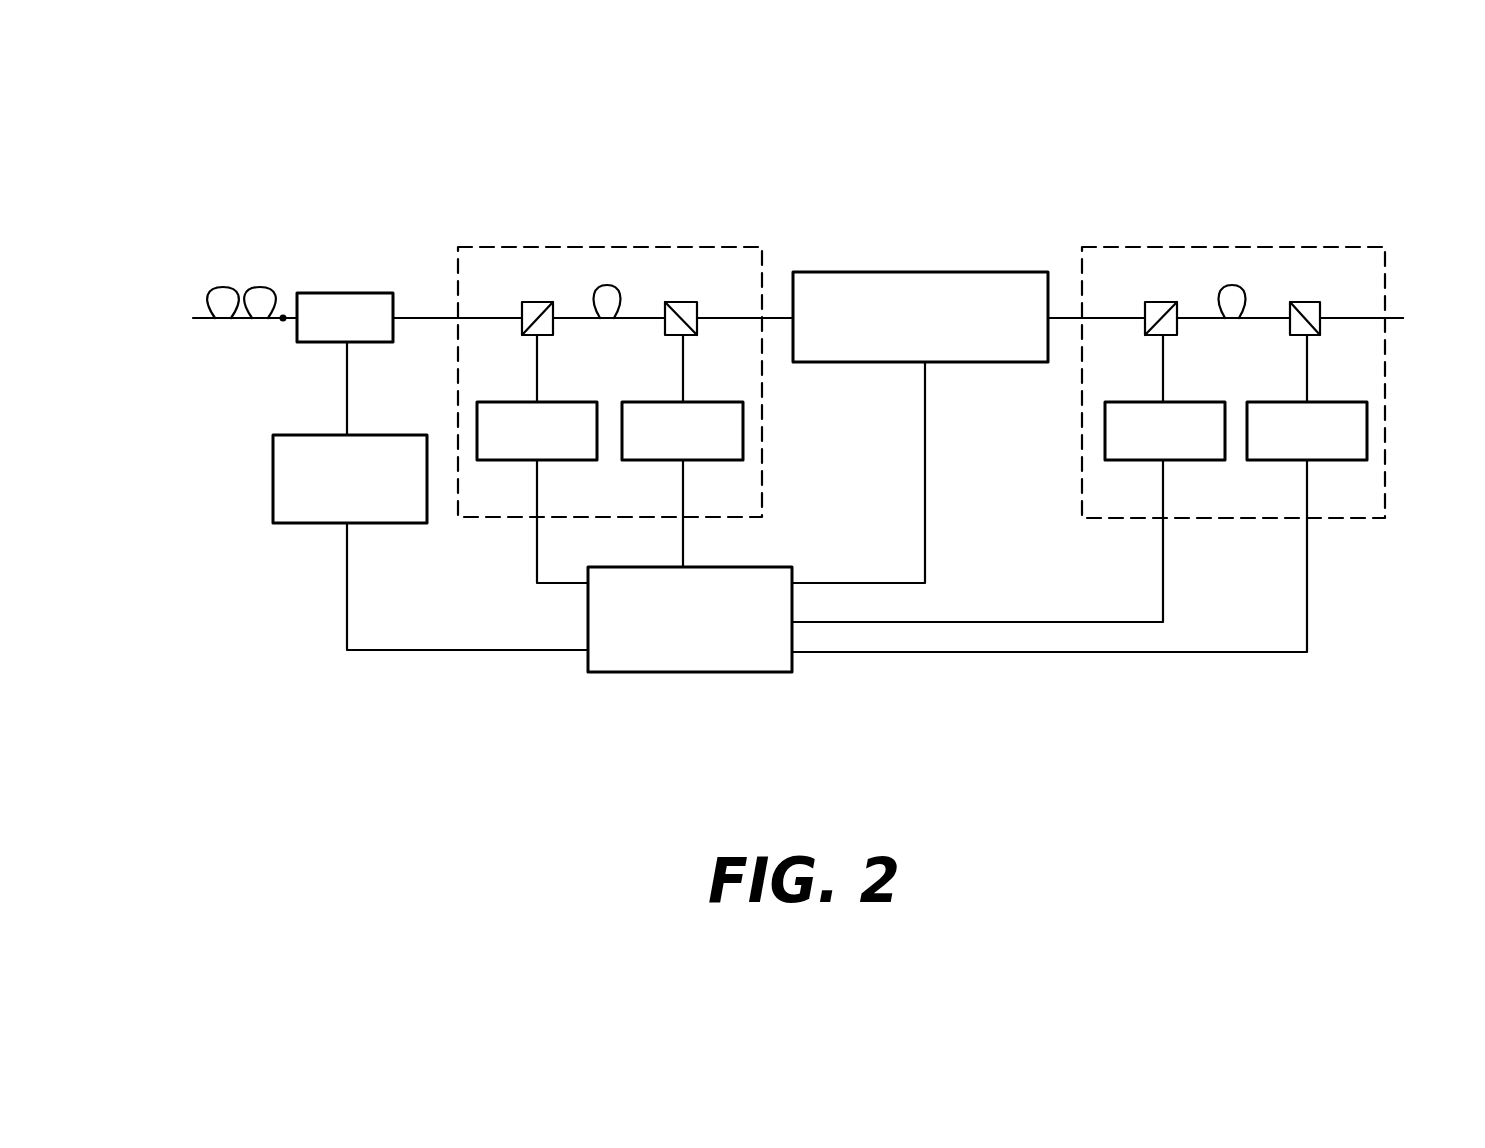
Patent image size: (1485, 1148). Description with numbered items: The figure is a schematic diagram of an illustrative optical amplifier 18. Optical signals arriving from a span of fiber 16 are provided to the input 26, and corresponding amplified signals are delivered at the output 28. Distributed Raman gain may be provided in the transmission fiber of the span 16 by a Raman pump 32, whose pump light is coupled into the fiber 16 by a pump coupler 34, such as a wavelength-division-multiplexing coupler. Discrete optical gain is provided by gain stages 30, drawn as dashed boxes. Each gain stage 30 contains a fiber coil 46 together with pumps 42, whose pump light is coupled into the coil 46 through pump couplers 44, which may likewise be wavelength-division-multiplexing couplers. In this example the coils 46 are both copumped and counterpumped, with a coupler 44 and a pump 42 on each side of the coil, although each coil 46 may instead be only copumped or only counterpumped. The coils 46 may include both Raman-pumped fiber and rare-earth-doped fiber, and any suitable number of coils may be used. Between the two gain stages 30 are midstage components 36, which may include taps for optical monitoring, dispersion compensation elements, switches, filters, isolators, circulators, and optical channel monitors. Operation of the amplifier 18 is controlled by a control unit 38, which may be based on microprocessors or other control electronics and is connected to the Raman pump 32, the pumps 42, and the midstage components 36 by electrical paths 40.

The span of fiber 16 is at (241, 262).
The amplifier 18 is at (1190, 160).
The input 26 is at (281, 321).
The output 28 is at (1397, 315).
The gain stage 30 is at (660, 247).
The Raman pump 32 is at (312, 524).
The pump coupler 34 is at (355, 293).
The midstage components 36 is at (960, 272).
The control unit 38 is at (650, 673).
The electrical path 40 is at (537, 553).
The pump 42 is at (566, 402).
The pump coupler 44 is at (531, 302).
The fiber coil 46 is at (592, 268).